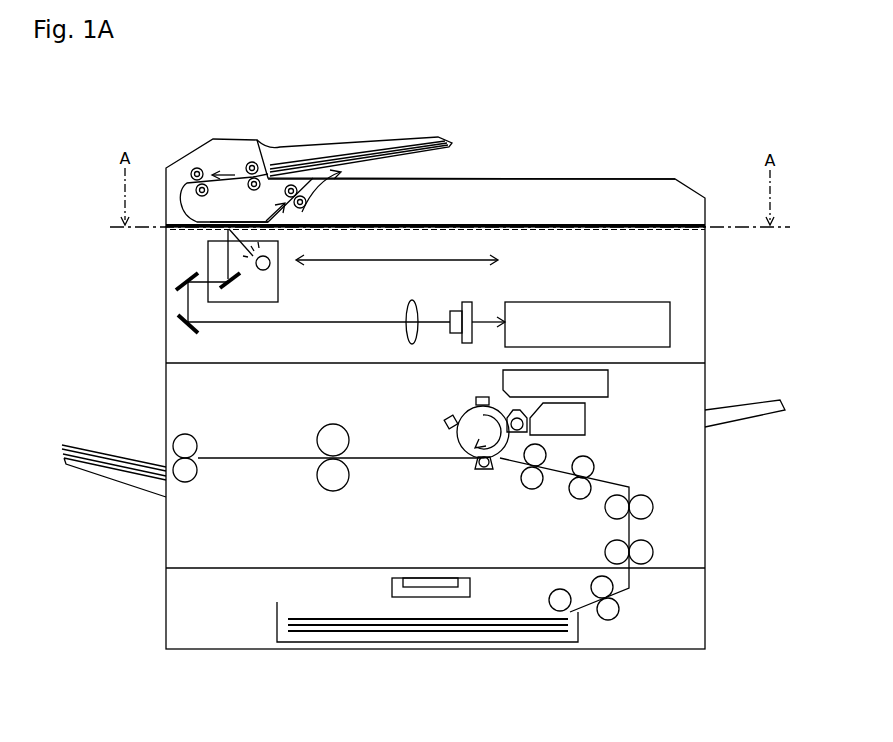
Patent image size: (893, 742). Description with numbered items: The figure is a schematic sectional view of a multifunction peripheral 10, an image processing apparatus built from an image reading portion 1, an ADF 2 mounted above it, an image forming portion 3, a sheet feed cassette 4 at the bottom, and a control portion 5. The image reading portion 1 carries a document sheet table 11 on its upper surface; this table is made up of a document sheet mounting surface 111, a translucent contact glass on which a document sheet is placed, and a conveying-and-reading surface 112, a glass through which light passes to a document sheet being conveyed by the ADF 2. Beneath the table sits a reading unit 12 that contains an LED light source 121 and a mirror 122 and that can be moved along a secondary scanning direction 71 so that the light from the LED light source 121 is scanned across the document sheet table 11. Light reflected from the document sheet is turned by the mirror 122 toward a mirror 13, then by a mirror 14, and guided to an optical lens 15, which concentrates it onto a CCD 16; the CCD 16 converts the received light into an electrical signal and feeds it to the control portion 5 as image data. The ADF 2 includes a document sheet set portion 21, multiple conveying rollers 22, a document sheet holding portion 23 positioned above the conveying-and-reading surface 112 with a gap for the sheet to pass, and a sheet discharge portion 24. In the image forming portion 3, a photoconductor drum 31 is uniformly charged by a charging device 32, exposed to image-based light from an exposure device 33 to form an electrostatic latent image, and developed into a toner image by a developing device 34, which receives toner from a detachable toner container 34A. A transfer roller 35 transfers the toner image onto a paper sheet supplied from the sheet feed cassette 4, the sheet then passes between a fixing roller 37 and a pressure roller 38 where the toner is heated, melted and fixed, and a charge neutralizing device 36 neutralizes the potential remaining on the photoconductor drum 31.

The multifunction peripheral 10 is at (120, 120).
The image reading portion 1 is at (705, 276).
The ADF 2 is at (705, 212).
The image forming portion 3 is at (705, 490).
The sheet feed cassette 4 is at (705, 600).
The control portion 5 is at (672, 323).
The document sheet table 11 is at (570, 238).
The document sheet mounting surface 111 is at (518, 236).
The conveying-and-reading surface 112 is at (227, 229).
The reading unit 12 is at (280, 248).
The LED light source 121 is at (271, 268).
The mirror 122 is at (229, 287).
The mirror 13 is at (182, 282).
The mirror 14 is at (180, 318).
The optical lens 15 is at (408, 305).
The CCD 16 is at (465, 303).
The document sheet set portion 21 is at (392, 136).
The conveying rollers 22 is at (192, 171).
The document sheet holding portion 23 is at (223, 223).
The sheet discharge portion 24 is at (438, 180).
The secondary scanning direction 71 is at (348, 264).
The photoconductor drum 31 is at (458, 441).
The charging device 32 is at (475, 400).
The exposure device 33 is at (610, 384).
The developing device 34 is at (511, 413).
The toner container 34A is at (587, 428).
The transfer roller 35 is at (488, 471).
The charge neutralizing device 36 is at (445, 419).
The fixing roller 37 is at (332, 423).
The pressure roller 38 is at (333, 492).